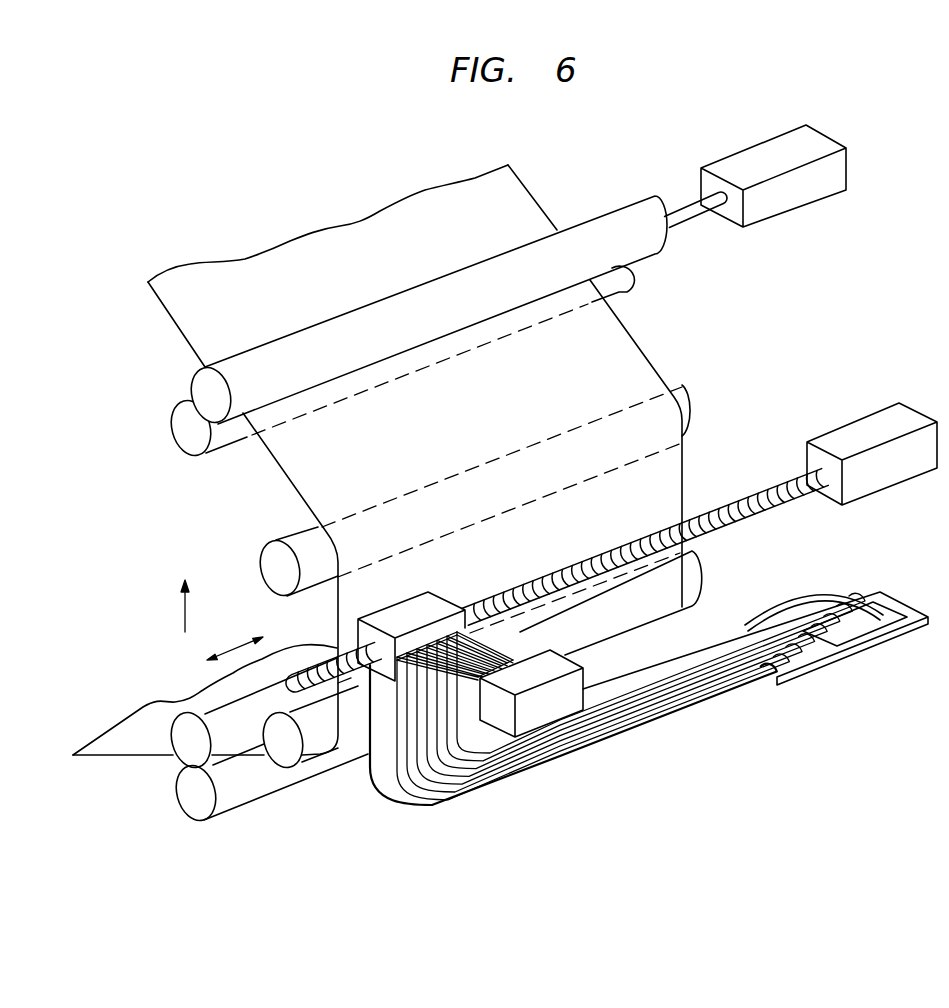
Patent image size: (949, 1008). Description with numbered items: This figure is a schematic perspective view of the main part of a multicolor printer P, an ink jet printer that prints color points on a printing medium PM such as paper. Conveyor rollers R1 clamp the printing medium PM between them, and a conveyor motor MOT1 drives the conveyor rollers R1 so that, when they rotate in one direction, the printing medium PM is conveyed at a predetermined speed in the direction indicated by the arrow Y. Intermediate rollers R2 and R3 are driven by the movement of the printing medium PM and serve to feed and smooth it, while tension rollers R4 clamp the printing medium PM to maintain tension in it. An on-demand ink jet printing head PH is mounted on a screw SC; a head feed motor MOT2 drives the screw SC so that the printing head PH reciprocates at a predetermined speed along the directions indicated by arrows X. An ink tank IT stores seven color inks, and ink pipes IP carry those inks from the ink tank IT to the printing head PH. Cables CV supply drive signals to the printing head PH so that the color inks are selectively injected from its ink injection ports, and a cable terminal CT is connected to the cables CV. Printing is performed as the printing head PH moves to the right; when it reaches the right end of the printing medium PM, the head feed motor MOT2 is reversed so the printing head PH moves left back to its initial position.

The multicolor printer P is at (866, 324).
The printing medium PM is at (530, 191).
The conveyor rollers R1 is at (632, 200).
The conveyor motor MOT1 is at (740, 152).
The intermediate roller R2 is at (707, 400).
The head feed motor MOT2 is at (857, 426).
The screw SC is at (735, 504).
The intermediate roller R3 is at (712, 578).
The tension rollers R4 is at (190, 793).
The printing head PH is at (412, 598).
The ink pipes IP is at (510, 650).
The ink tank IT is at (588, 672).
The cables CV is at (650, 724).
The cable terminal CT is at (845, 652).
The arrows X is at (247, 641).
The arrow Y is at (184, 592).